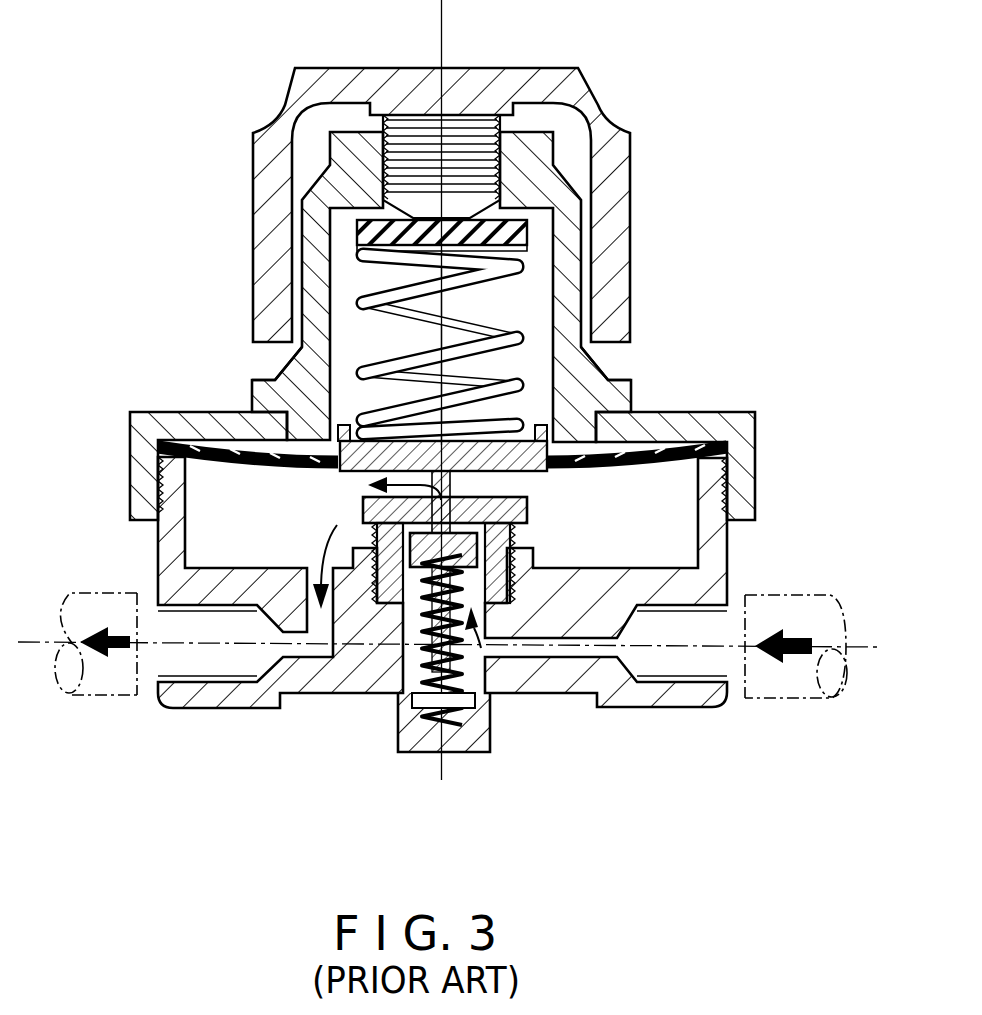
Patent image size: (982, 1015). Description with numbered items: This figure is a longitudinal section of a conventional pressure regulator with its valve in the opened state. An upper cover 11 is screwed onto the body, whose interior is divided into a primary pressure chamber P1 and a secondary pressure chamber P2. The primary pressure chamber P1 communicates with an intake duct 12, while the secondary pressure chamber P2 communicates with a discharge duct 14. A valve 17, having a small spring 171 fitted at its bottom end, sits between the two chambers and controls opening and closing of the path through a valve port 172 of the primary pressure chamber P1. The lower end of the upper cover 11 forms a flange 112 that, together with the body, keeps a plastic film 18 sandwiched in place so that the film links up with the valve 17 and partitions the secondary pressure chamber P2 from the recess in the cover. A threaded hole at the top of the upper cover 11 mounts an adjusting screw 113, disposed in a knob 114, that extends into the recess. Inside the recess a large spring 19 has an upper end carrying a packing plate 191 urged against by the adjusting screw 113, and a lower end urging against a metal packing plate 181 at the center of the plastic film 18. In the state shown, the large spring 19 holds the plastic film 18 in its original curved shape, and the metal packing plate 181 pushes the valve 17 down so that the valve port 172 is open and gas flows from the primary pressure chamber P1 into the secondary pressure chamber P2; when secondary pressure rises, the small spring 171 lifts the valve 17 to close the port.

The upper cover 11 is at (583, 312).
The flange 112 is at (707, 440).
The adjusting screw 113 is at (463, 150).
The knob 114 is at (403, 90).
The intake duct 12 is at (777, 668).
The discharge duct 14 is at (102, 680).
The valve 17 is at (462, 640).
The small spring 171 is at (427, 707).
The valve port 172 is at (597, 413).
The plastic film 18 is at (385, 287).
The metal packing plate 181 is at (280, 347).
The large spring 19 is at (517, 310).
The packing plate 191 is at (512, 228).
The primary pressure chamber P1 is at (680, 663).
The secondary pressure chamber P2 is at (209, 663).